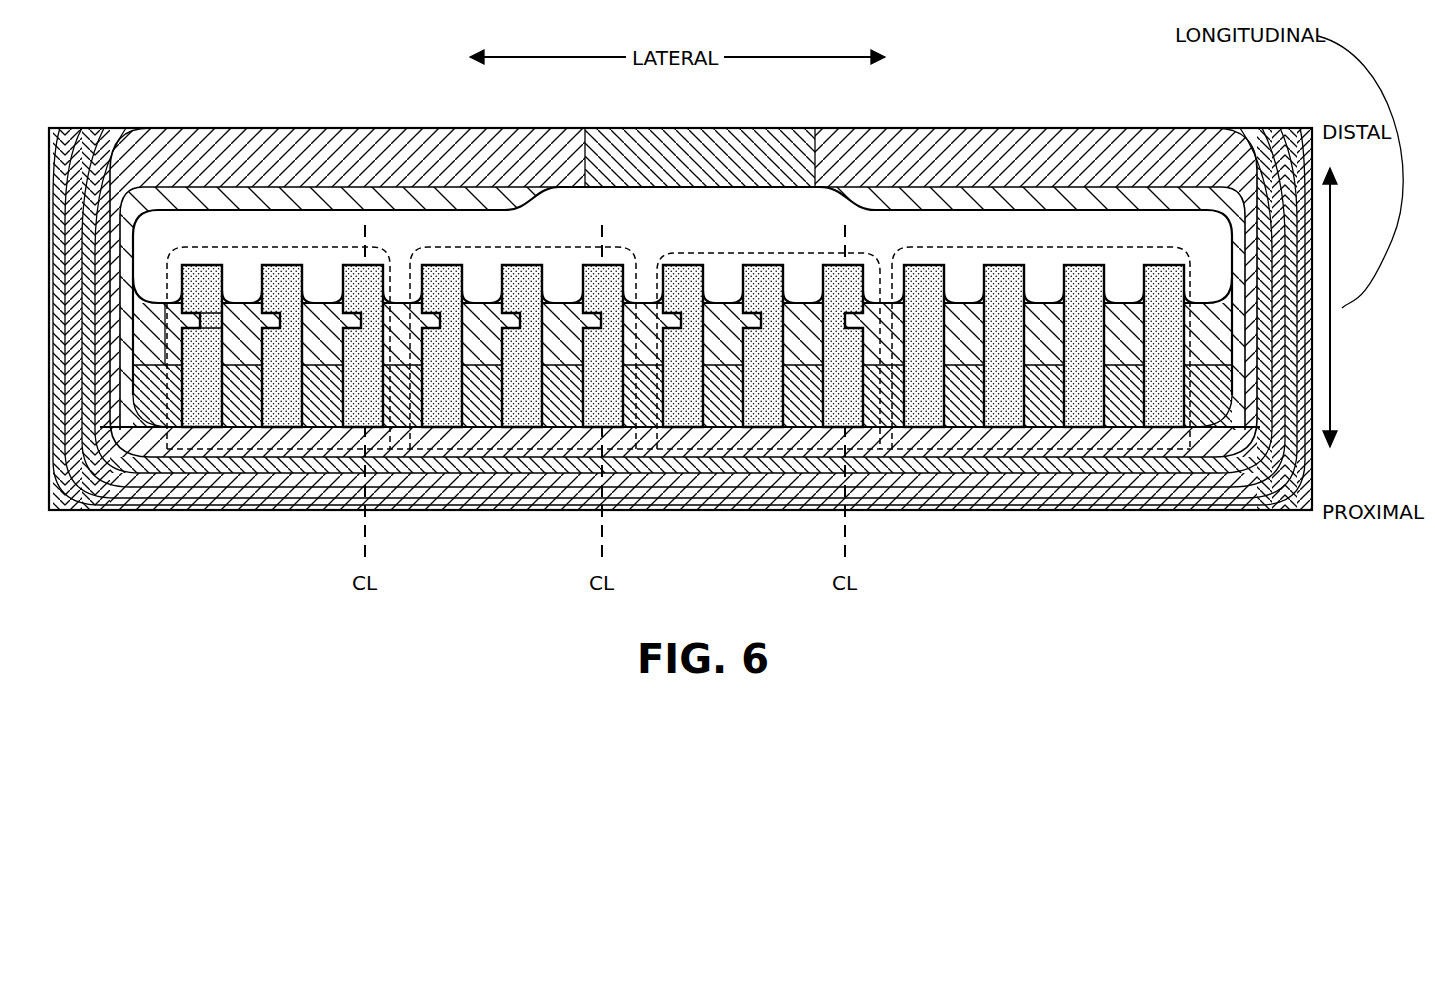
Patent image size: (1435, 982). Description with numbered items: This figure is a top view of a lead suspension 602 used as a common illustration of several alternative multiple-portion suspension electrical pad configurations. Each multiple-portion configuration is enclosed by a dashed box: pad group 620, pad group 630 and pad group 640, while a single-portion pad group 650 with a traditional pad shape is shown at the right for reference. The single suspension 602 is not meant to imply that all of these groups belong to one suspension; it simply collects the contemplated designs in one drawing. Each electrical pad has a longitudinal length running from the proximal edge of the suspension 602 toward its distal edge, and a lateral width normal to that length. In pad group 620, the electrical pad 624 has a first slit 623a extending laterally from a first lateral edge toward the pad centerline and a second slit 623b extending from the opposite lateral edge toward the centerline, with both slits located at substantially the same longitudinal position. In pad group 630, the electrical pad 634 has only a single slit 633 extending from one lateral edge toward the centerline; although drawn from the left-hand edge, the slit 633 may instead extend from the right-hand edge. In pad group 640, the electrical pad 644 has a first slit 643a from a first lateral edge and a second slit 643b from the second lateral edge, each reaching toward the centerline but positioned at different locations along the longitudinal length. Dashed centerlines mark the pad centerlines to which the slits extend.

The suspension 602 is at (1190, 145).
The pad group 620 is at (285, 242).
The first slit 623a is at (180, 302).
The second slit 623b is at (224, 320).
The electrical pad 624 is at (203, 275).
The pad group 630 is at (550, 245).
The slit 633 is at (492, 316).
The electrical pad 634 is at (443, 277).
The pad group 640 is at (758, 252).
The first slit 643a is at (745, 317).
The second slit 643b is at (814, 322).
The electrical pad 644 is at (684, 272).
The single-portion pad group 650 is at (1042, 247).